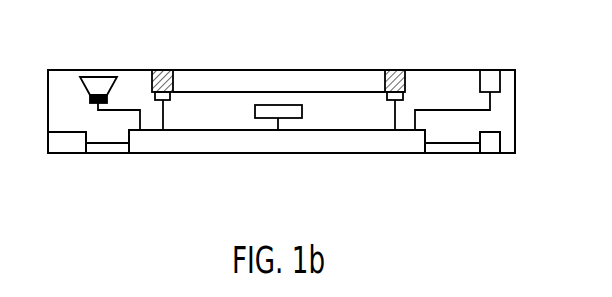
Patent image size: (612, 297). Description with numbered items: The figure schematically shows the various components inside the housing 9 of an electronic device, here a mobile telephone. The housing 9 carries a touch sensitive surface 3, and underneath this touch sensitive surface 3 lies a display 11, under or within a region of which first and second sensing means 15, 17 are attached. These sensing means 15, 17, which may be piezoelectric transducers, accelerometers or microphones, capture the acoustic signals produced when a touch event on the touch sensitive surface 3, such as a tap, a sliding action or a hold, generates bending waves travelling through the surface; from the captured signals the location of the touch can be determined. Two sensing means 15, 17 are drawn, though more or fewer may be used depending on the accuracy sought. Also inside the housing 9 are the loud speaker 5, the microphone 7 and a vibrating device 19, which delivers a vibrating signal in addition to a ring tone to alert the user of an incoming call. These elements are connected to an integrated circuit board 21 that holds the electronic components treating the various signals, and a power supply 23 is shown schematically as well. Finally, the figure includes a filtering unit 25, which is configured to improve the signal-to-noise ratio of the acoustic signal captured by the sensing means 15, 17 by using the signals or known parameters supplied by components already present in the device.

The touch sensitive surface 3 is at (238, 70).
The loud speaker 5 is at (78, 84).
The microphone 7 is at (480, 80).
The housing 9 is at (438, 153).
The display 11 is at (333, 76).
The first sensing means 15 is at (153, 98).
The second sensing means 17 is at (406, 93).
The vibrating device 19 is at (490, 145).
The integrated circuit board 21 is at (198, 145).
The power supply 23 is at (67, 145).
The filtering unit 25 is at (255, 114).